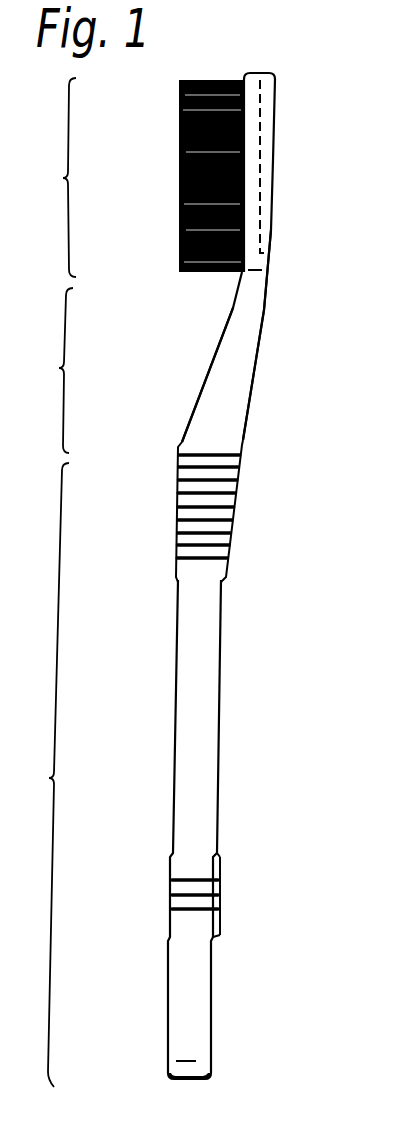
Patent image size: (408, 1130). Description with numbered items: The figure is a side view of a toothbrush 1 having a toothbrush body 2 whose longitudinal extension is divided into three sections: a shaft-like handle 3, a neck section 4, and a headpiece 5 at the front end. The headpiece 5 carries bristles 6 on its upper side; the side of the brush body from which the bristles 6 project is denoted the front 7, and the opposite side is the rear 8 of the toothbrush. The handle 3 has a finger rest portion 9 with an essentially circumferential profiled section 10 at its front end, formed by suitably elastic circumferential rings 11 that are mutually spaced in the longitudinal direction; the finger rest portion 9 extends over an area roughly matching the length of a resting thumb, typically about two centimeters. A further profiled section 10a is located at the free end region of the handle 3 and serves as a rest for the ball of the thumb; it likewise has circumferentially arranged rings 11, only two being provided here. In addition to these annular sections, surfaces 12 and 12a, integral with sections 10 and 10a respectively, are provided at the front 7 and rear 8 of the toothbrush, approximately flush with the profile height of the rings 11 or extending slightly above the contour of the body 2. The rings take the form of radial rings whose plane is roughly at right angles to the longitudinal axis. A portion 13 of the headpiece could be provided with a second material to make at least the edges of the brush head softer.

The toothbrush 1 is at (221, 576).
The toothbrush body 2 is at (215, 742).
The handle 3 is at (51, 775).
The neck section 4 is at (56, 370).
The headpiece 5 is at (60, 177).
The bristles 6 is at (179, 134).
The front 7 is at (202, 332).
The rear 8 is at (268, 360).
The finger rest portion 9 is at (227, 497).
The profiled section 10 is at (237, 452).
The further profiled section 10a is at (194, 878).
The rings 11 is at (183, 457).
The surfaces 12 is at (241, 472).
The surfaces 12a is at (221, 867).
The portion 13 is at (267, 165).